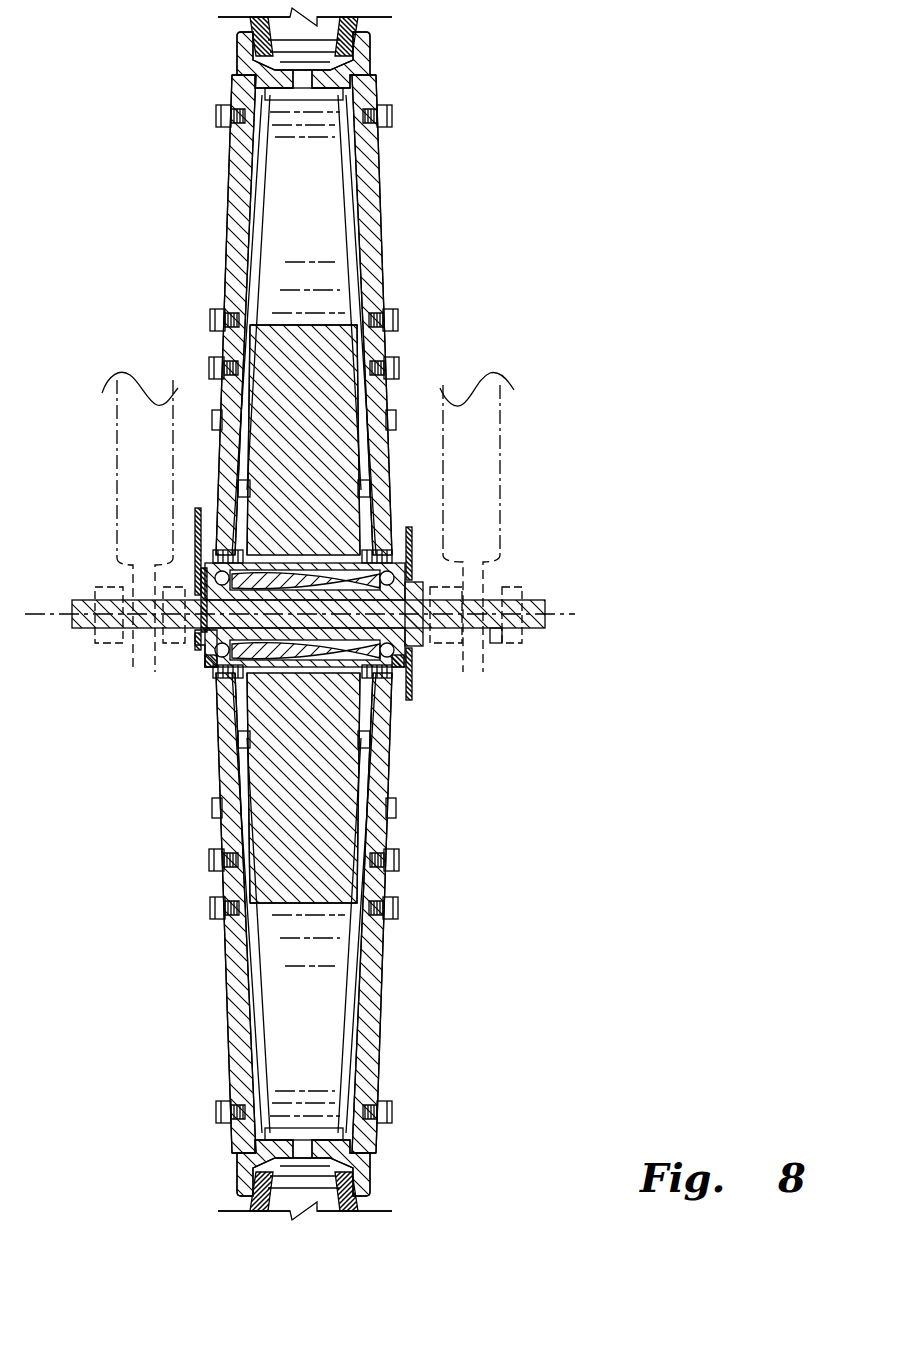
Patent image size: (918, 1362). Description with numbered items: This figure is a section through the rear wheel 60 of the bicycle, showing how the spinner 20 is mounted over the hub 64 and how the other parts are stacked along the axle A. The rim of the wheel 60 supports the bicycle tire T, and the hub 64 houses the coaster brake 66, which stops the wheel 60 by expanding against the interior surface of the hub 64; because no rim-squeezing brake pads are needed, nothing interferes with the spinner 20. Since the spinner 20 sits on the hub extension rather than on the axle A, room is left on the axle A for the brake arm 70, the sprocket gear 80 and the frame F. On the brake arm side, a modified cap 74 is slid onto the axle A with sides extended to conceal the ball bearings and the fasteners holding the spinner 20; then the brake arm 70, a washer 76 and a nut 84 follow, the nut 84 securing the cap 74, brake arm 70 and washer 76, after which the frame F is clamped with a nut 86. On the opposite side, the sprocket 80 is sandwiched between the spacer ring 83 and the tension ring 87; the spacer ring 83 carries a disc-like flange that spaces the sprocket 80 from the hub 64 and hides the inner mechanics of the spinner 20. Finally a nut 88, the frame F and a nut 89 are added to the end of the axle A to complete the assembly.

The spinner 20 is at (231, 172).
The rear wheel 60 is at (390, 50).
The bicycle tire T is at (250, 35).
The hub 64 is at (315, 567).
The coaster brake 66 is at (313, 652).
The brake arm 70 is at (207, 660).
The cap 74 is at (207, 672).
The washer 76 is at (190, 642).
The sprocket gear 80 is at (413, 682).
The spacer ring 83 is at (393, 683).
The nut 84 is at (186, 590).
The tension ring 87 is at (418, 580).
The nut 86 is at (100, 595).
The nut 88 is at (440, 660).
The nut 89 is at (510, 640).
The axle A is at (568, 614).
The frame F is at (143, 478).